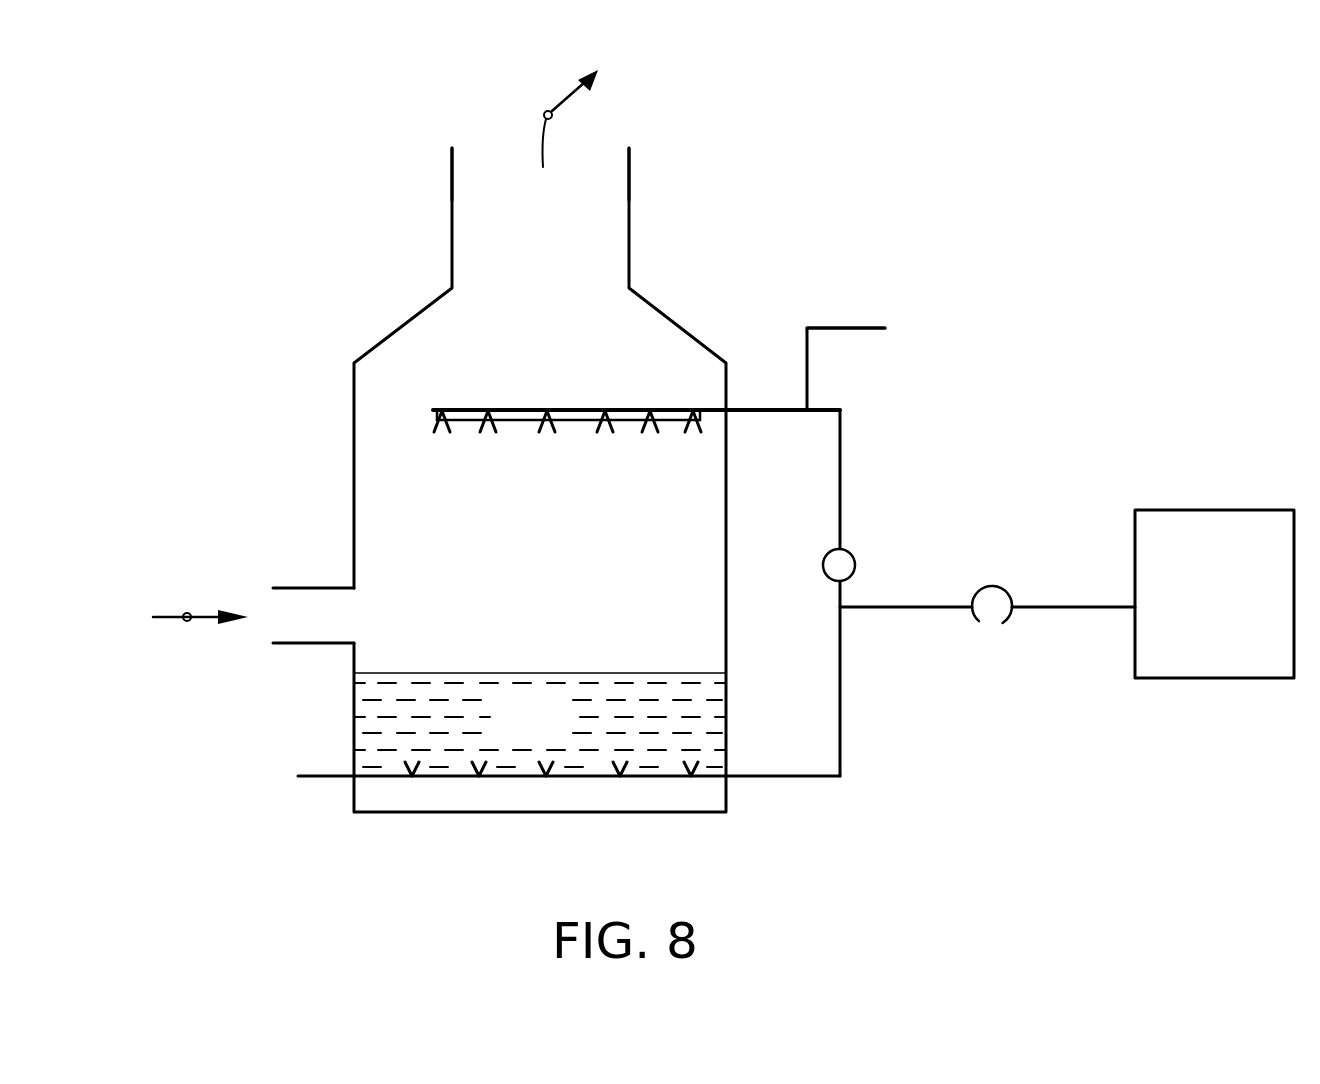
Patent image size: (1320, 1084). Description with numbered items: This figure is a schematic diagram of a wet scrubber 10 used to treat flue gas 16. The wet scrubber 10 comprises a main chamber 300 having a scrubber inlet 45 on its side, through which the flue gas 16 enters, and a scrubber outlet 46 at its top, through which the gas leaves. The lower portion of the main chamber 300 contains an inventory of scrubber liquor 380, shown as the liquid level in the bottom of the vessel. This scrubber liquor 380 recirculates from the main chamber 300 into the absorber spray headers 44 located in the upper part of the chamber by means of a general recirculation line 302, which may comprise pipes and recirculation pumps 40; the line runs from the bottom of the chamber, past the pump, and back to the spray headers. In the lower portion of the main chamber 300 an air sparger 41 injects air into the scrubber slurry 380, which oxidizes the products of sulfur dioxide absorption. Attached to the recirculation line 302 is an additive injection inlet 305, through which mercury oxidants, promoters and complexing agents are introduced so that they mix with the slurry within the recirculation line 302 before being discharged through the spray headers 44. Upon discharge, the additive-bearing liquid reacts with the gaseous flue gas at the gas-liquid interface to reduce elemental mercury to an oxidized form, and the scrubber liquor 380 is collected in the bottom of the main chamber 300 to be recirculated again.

The wet scrubber 10 is at (177, 202).
The flue gas 16 is at (552, 117).
The recirculation pump 40 is at (855, 572).
The air sparger 41 is at (385, 777).
The absorber spray headers 44 is at (663, 410).
The scrubber inlet 45 is at (322, 633).
The scrubber outlet 46 is at (553, 232).
The main chamber 300 is at (492, 560).
The general recirculation line 302 is at (840, 507).
The additive injection inlet 305 is at (810, 404).
The scrubber liquor 380 is at (540, 720).